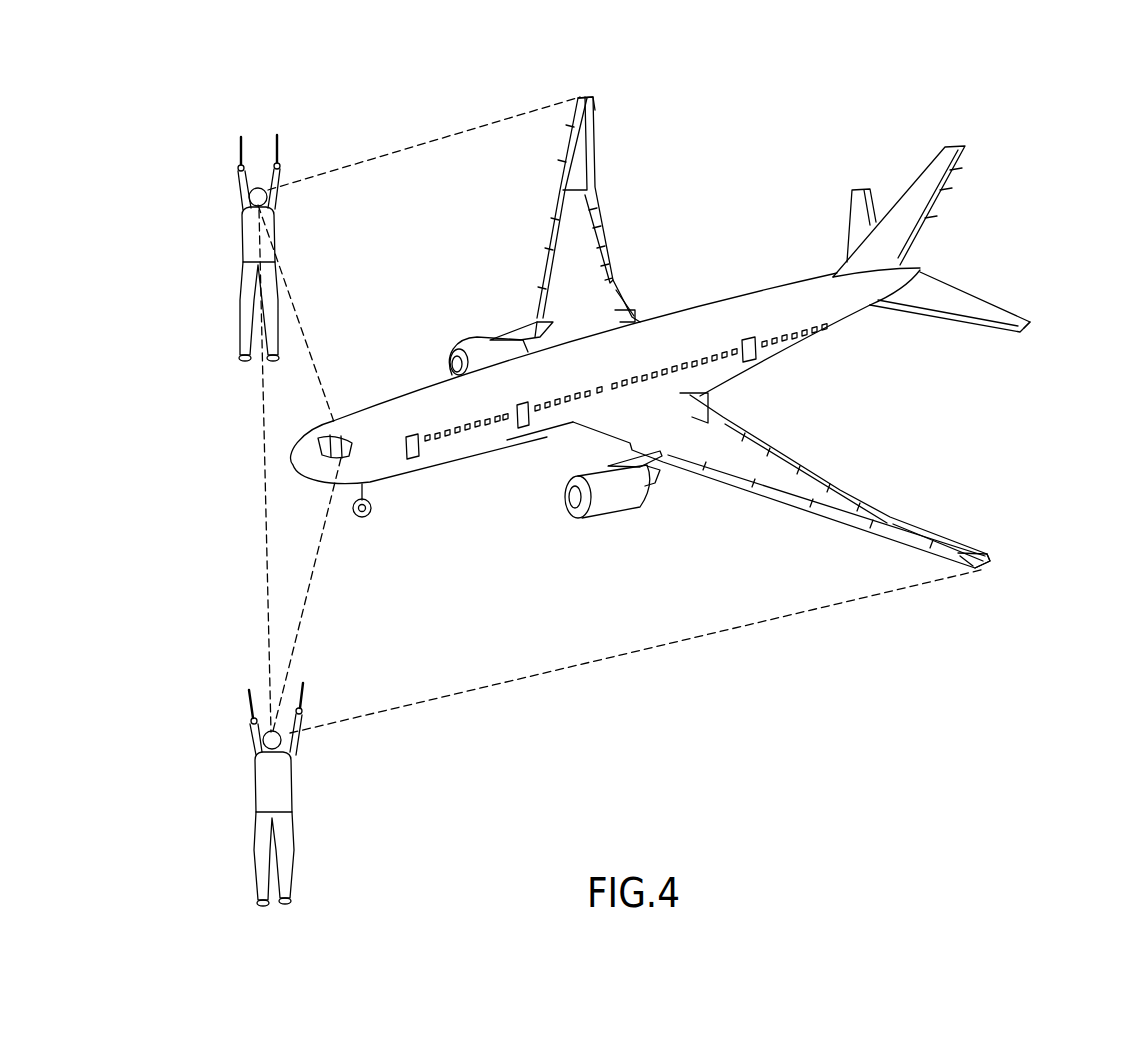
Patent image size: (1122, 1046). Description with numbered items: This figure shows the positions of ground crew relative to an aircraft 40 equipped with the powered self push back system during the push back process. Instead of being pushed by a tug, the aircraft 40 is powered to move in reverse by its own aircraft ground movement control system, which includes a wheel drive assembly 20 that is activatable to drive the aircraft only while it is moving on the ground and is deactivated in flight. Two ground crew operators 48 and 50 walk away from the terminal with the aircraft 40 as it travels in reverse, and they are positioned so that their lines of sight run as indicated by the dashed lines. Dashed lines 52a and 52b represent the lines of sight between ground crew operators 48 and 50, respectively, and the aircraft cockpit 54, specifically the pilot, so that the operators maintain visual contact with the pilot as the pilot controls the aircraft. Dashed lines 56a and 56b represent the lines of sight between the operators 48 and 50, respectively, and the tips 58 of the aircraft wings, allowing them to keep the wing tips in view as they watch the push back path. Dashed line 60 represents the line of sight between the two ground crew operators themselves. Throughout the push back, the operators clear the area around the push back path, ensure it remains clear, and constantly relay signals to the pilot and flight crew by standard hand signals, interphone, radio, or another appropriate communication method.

The wheel drive assembly 20 is at (388, 516).
The aircraft 40 is at (645, 340).
The ground crew operator 48 is at (257, 775).
The ground crew operator 50 is at (240, 228).
The line of sight 52a is at (315, 565).
The line of sight 52b is at (318, 328).
The aircraft cockpit 54 is at (320, 442).
The line of sight 56a is at (622, 655).
The line of sight 56b is at (418, 150).
The wing tip 58 is at (598, 84).
The line of sight 60 is at (267, 465).